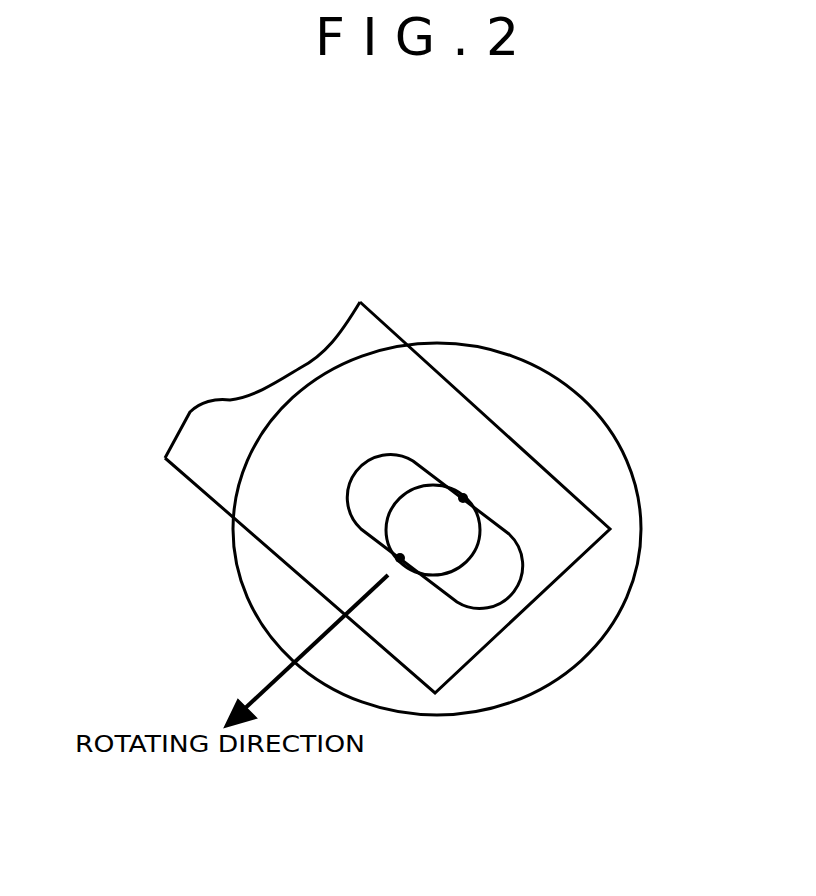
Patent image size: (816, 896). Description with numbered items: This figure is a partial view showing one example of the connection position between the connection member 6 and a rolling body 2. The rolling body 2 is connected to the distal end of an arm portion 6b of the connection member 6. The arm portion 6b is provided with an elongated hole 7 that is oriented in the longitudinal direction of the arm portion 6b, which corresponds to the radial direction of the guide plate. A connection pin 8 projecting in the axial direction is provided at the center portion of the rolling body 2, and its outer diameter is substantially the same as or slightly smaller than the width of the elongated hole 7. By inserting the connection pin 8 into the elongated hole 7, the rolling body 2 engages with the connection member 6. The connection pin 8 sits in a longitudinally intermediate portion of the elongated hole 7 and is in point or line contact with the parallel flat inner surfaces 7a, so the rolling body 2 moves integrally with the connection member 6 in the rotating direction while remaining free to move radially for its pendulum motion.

The rolling body 2 is at (641, 560).
The connection member 6 is at (190, 405).
The arm portion 6b is at (300, 395).
The elongated hole 7 is at (495, 610).
The flat inner surfaces 7a is at (463, 498).
The connection pin 8 is at (440, 548).